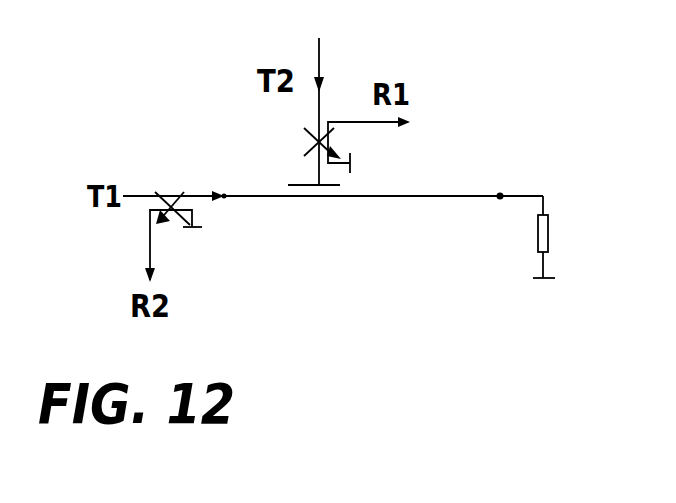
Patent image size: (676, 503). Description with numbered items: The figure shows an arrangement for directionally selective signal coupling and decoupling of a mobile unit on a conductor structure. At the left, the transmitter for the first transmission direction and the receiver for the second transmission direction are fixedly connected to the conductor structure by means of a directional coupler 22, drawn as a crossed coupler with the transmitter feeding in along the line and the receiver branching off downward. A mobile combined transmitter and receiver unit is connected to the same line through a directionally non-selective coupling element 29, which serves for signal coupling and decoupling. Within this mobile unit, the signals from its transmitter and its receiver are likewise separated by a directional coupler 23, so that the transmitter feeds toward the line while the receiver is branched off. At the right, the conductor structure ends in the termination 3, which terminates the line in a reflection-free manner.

The directional coupler 23 is at (342, 150).
The directional coupler 22 is at (169, 226).
The directionally non-selective coupling element 29 is at (320, 197).
The termination 3 is at (550, 232).